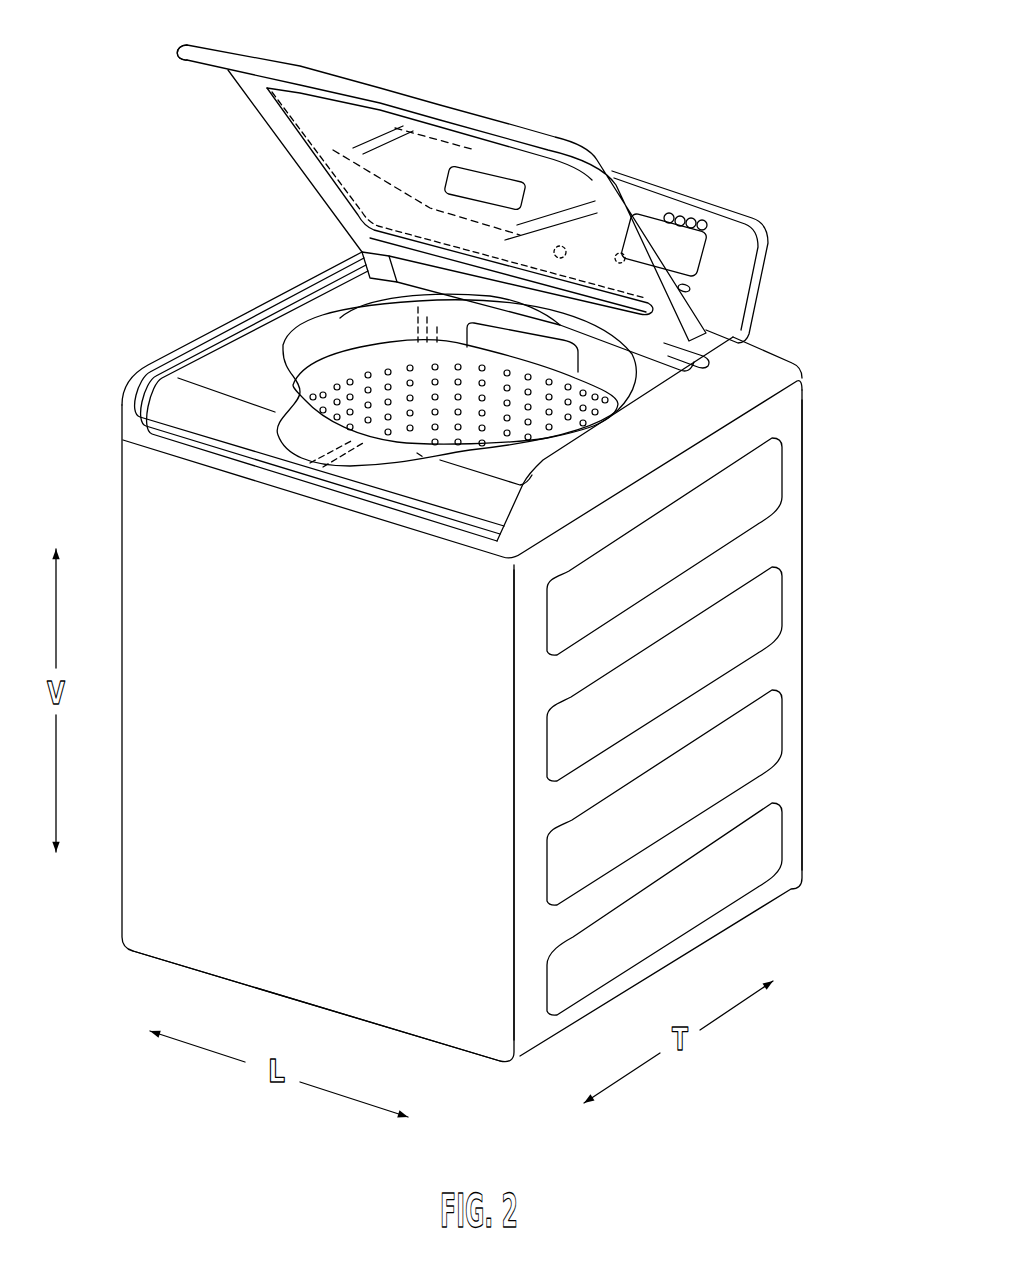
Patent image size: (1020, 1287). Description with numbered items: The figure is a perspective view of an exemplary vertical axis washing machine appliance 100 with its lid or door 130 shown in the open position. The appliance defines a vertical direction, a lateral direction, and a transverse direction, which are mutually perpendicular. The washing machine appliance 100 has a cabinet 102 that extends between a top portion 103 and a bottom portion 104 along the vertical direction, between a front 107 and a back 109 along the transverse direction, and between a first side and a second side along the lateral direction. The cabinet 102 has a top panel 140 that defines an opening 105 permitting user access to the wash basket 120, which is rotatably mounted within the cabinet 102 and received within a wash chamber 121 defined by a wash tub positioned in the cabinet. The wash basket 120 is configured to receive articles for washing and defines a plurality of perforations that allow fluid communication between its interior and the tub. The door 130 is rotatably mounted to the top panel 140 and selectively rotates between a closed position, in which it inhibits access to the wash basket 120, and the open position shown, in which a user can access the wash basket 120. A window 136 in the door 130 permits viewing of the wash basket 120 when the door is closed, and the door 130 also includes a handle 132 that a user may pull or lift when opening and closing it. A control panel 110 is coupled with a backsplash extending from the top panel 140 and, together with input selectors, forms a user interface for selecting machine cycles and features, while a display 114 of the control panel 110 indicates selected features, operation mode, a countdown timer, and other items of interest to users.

The washing machine appliance 100 is at (145, 222).
The cabinet 102 is at (780, 780).
The top portion 103 is at (110, 420).
The bottom portion 104 is at (100, 941).
The opening 105 is at (306, 354).
The front 107 is at (538, 1066).
The back 109 is at (809, 897).
The control panel 110 is at (758, 283).
The display 114 is at (655, 231).
The wash basket 120 is at (364, 262).
The wash chamber 121 is at (605, 399).
The door 130 is at (508, 132).
The handle 132 is at (211, 70).
The window 136 is at (310, 123).
The top panel 140 is at (763, 370).